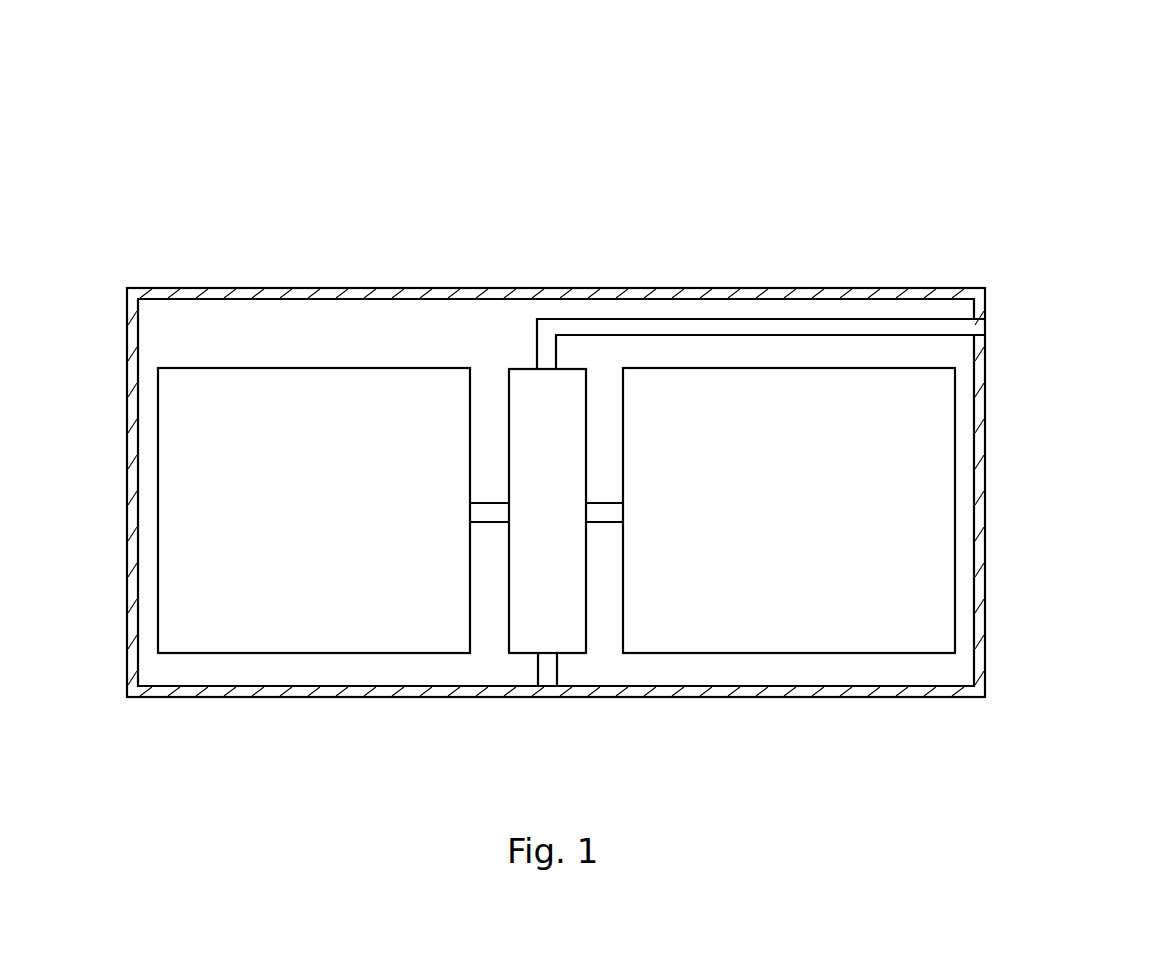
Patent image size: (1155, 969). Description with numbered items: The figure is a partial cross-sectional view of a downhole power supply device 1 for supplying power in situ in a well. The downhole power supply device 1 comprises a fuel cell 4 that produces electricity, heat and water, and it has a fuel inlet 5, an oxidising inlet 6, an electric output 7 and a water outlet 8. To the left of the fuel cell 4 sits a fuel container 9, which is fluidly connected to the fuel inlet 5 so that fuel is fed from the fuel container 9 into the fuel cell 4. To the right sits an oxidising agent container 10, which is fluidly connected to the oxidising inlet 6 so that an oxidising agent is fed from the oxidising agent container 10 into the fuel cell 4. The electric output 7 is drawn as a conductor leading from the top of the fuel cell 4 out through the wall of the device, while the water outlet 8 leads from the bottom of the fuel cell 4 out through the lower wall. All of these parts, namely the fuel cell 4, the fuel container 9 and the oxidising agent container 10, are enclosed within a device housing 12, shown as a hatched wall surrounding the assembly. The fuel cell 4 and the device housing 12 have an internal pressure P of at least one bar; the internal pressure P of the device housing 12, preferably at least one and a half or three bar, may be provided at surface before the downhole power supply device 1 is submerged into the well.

The downhole power supply device 1 is at (631, 418).
The fuel cell 4 is at (537, 393).
The fuel inlet 5 is at (493, 510).
The oxidising inlet 6 is at (602, 510).
The electric output 7 is at (897, 328).
The water outlet 8 is at (545, 672).
The fuel container 9 is at (314, 510).
The oxidising agent container 10 is at (789, 510).
The device housing 12 is at (162, 290).
The internal pressure P is at (523, 628).